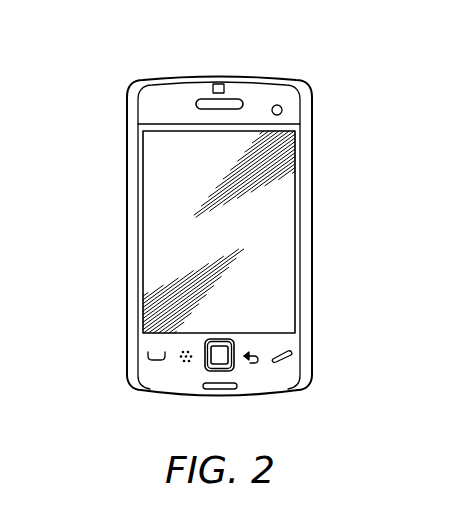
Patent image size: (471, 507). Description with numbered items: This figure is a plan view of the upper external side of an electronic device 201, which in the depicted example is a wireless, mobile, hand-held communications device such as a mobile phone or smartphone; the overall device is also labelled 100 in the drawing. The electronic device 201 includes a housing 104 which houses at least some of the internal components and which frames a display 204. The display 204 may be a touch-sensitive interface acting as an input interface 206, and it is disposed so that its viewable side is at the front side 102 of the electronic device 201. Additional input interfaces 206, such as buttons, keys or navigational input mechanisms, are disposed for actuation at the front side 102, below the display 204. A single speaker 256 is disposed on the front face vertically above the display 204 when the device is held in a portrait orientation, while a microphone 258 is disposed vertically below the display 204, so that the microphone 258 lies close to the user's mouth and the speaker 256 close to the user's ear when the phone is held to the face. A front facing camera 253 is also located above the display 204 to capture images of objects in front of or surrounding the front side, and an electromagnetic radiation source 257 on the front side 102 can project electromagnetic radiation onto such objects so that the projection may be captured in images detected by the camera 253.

The mobile communication device 100 is at (121, 79).
The electronic device 201 is at (160, 51).
The front side 102 is at (146, 343).
The housing 104 is at (312, 141).
The display 204 is at (143, 183).
The input interface 206 is at (143, 256).
The front facing camera 253 is at (218, 84).
The speaker 256 is at (236, 99).
The electromagnetic radiation source 257 is at (282, 110).
The microphone 258 is at (218, 389).